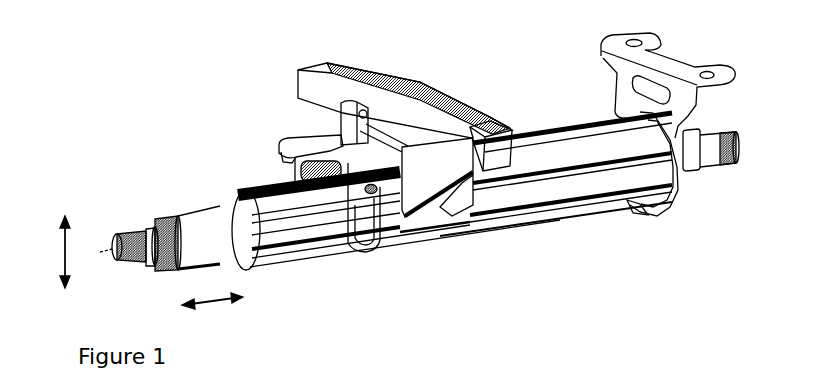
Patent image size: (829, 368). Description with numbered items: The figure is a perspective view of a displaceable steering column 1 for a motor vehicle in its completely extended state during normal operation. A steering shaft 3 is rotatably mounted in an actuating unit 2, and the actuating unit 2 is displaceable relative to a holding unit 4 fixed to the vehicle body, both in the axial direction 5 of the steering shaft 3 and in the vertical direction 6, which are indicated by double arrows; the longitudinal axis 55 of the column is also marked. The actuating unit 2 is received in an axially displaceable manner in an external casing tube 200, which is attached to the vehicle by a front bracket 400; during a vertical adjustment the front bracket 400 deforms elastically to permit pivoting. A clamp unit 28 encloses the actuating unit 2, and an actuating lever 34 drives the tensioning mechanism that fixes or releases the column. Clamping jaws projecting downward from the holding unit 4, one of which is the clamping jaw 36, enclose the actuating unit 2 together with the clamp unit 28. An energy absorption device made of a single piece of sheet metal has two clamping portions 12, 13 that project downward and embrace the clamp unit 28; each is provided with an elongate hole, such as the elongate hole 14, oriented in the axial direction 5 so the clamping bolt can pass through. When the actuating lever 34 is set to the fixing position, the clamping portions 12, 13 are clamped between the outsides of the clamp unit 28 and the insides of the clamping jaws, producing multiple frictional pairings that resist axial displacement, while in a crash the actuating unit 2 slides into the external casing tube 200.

The steering column 1 is at (546, 52).
The actuating unit 2 is at (283, 245).
The steering shaft 3 is at (160, 266).
The holding unit 4 is at (312, 88).
The axial direction 5 is at (213, 309).
The vertical direction 6 is at (100, 252).
The clamping portion 12 is at (307, 182).
The clamping portion 13 is at (363, 205).
The elongate hole 14 is at (381, 192).
The clamp unit 28 is at (374, 192).
The actuating lever 34 is at (279, 158).
The clamping jaw 36 is at (443, 200).
The longitudinal axis 55 is at (87, 252).
The external casing tube 200 is at (578, 192).
The front bracket 400 is at (680, 90).